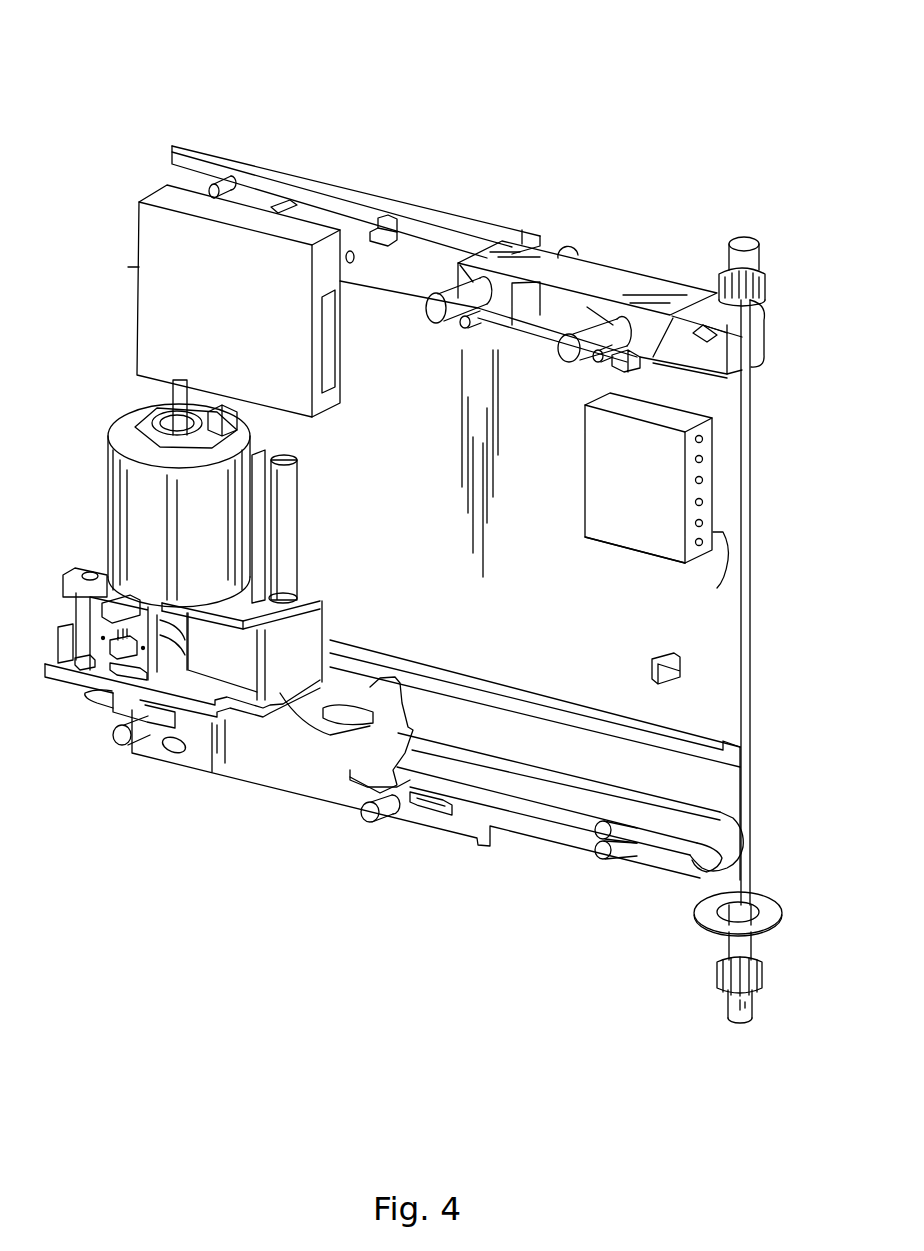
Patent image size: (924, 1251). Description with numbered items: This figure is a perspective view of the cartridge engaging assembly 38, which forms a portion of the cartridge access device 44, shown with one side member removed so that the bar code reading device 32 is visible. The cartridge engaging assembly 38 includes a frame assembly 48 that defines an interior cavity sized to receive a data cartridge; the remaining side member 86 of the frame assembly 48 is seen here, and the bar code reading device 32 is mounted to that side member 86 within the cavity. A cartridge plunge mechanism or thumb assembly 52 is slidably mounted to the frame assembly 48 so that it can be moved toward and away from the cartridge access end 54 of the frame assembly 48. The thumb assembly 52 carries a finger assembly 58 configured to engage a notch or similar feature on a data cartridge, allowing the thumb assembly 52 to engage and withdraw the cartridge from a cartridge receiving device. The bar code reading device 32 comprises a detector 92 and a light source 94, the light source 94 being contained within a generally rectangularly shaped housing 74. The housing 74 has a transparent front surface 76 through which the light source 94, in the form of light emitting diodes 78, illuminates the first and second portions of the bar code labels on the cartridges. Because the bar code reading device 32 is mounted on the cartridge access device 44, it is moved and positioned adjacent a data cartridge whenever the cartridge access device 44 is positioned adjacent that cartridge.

The cartridge engaging assembly 38 is at (122, 70).
The frame assembly 48 is at (428, 203).
The detector 92 is at (137, 265).
The bar code reading device 32 is at (438, 445).
The side member 86 is at (468, 597).
The housing 74 is at (585, 487).
The light emitting diodes 78 is at (703, 459).
The light source 94 is at (657, 560).
The transparent front surface 76 is at (717, 588).
The cartridge access device 44 is at (750, 512).
The cartridge access end 54 is at (750, 652).
The thumb assembly 52 is at (103, 489).
The finger assembly 58 is at (307, 716).